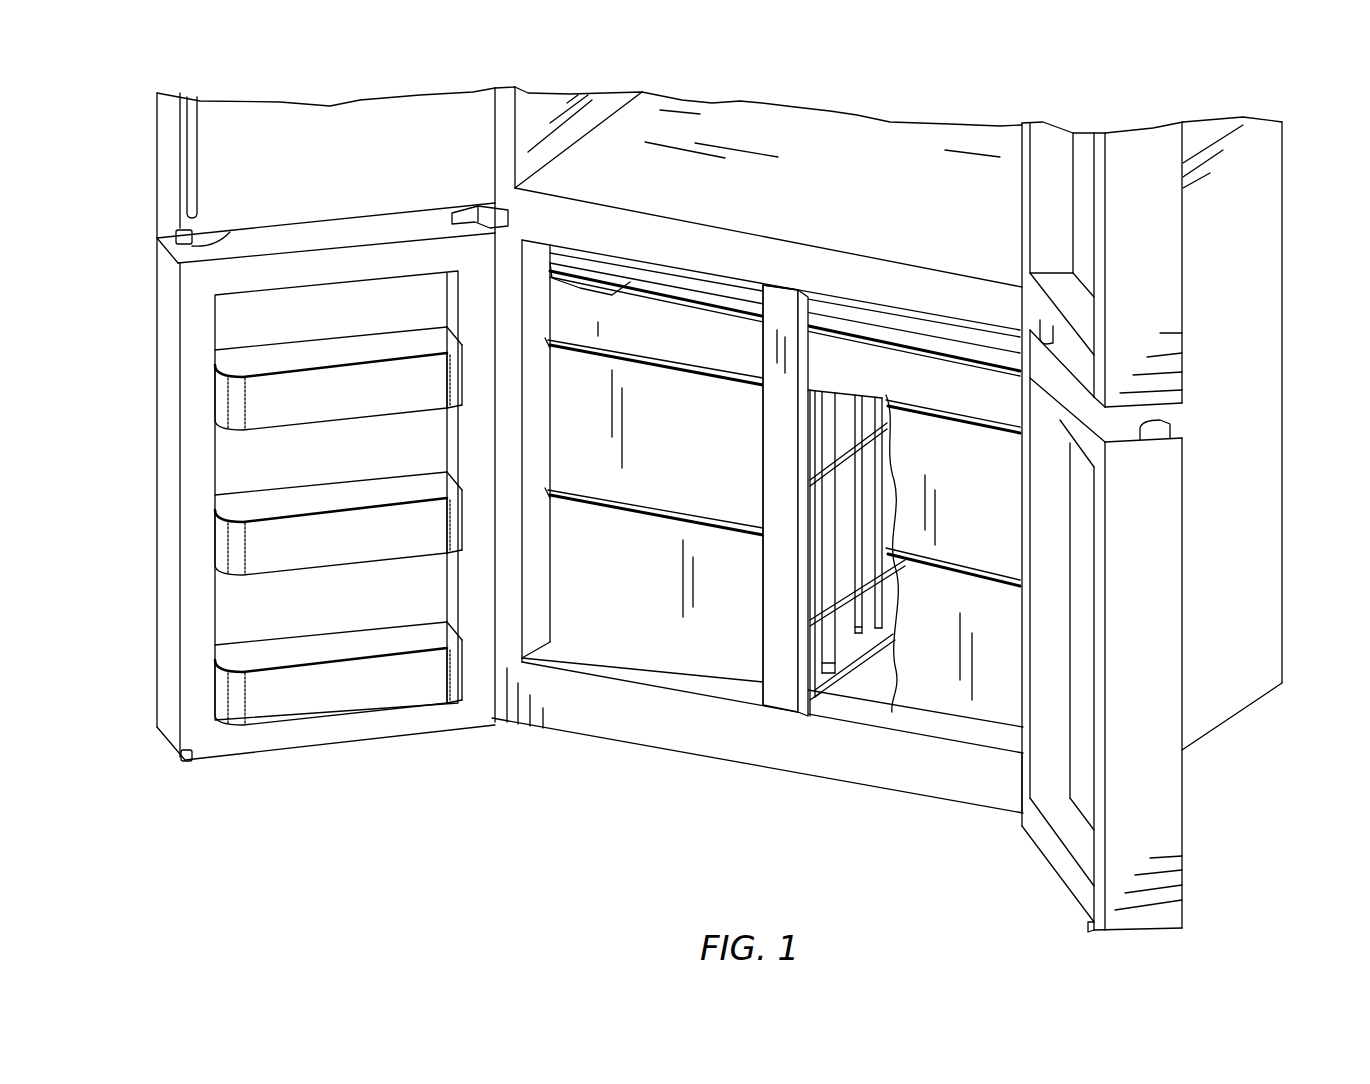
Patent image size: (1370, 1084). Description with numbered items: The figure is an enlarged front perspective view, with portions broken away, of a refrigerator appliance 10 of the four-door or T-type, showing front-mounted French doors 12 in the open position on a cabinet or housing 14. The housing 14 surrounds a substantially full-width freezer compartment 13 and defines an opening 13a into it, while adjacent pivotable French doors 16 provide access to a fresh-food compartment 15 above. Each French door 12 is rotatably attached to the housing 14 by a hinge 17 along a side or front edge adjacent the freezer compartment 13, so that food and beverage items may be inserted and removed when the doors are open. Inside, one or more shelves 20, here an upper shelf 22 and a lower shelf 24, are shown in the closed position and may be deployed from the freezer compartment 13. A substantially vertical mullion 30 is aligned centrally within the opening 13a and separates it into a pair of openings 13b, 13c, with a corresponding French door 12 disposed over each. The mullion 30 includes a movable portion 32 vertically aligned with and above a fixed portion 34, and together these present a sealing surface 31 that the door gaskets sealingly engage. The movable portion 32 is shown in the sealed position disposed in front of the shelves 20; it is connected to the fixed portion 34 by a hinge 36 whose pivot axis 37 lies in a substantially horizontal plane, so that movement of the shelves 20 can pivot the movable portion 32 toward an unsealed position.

The refrigerator appliance 10 is at (265, 85).
The French doors 12 is at (168, 724).
The freezer compartment 13 is at (698, 728).
The opening 13a is at (830, 732).
The opening 13b is at (622, 672).
The opening 13c is at (953, 728).
The cabinet or housing 14 is at (1240, 560).
The fresh-food compartment 15 is at (660, 125).
The French doors 16 is at (175, 162).
The hinge 17 is at (512, 220).
The shelves 20 is at (843, 298).
The upper shelf 22 is at (670, 282).
The lower shelf 24 is at (598, 330).
The mullion 30 is at (742, 580).
The sealing surface 31 is at (784, 449).
The movable portion 32 is at (745, 347).
The fixed portion 34 is at (805, 647).
The hinge 36 is at (882, 443).
The pivot axis 37 is at (862, 418).